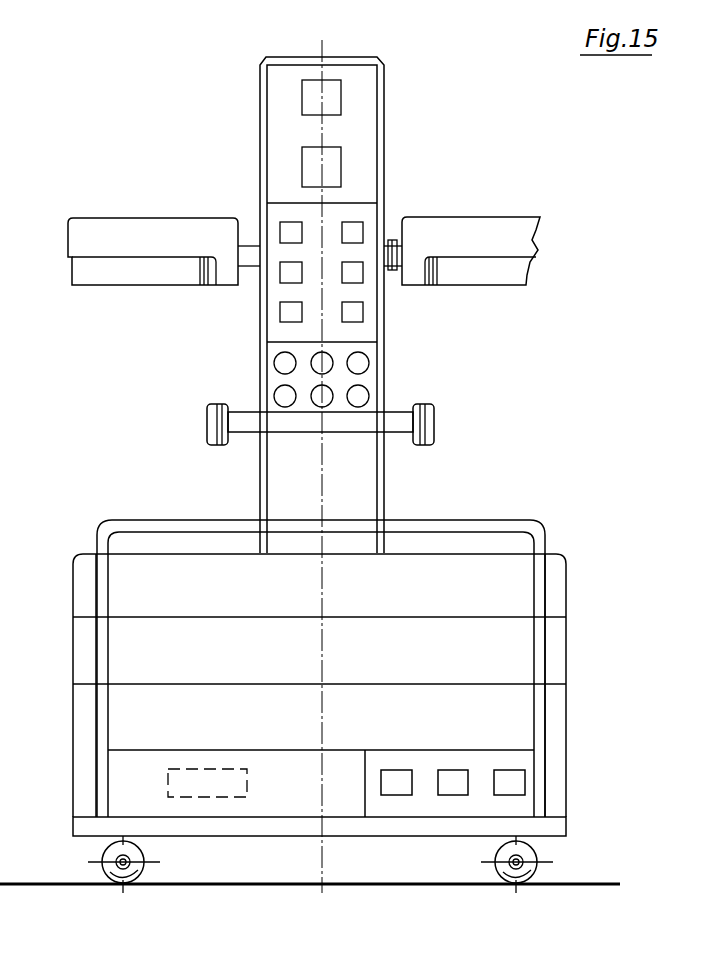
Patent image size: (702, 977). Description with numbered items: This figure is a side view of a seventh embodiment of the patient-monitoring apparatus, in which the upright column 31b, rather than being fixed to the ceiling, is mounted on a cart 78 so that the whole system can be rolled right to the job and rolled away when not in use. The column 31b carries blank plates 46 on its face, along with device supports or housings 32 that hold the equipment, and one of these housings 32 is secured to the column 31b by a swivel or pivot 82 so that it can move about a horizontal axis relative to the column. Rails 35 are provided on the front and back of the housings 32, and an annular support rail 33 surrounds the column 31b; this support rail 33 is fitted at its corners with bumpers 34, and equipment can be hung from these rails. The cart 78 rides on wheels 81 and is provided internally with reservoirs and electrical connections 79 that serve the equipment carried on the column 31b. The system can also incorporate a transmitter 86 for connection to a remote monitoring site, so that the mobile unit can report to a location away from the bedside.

The column 31b is at (386, 155).
The blank plates 46 is at (272, 164).
The device support or housing 32 is at (98, 235).
The rails 35 is at (102, 277).
The swivel or pivot 82 is at (391, 238).
The annular support rail 33 is at (388, 420).
The bumpers 34 is at (421, 423).
The cart 78 is at (549, 541).
The transmitter 86 is at (220, 767).
The reservoirs and electrical connections 79 is at (420, 800).
The wheels 81 is at (537, 872).